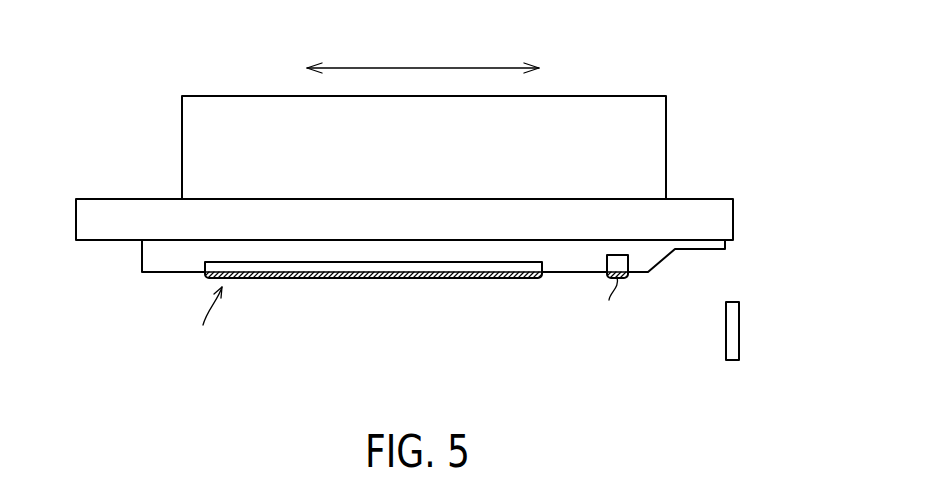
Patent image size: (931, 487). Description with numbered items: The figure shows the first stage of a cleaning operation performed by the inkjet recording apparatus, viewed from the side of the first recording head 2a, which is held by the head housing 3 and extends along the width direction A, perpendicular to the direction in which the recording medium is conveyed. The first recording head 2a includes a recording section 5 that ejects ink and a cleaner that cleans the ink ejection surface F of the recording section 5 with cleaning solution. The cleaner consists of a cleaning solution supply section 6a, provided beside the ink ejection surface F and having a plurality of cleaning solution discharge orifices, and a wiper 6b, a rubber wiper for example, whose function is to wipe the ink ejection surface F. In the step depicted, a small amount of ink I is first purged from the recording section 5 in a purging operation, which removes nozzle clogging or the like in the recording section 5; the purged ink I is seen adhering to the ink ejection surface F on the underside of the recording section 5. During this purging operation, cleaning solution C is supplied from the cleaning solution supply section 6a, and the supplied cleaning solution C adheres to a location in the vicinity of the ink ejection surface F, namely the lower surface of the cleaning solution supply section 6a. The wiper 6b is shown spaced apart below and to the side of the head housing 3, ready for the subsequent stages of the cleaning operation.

The first recording head 2a is at (699, 92).
The head housing 3 is at (720, 220).
The recording section 5 is at (215, 267).
The cleaning solution supply section 6a is at (620, 265).
The wiper 6b is at (735, 327).
The width direction A is at (423, 54).
The cleaning solution C is at (614, 308).
The ink ejection surface F is at (208, 321).
The ink I is at (290, 282).